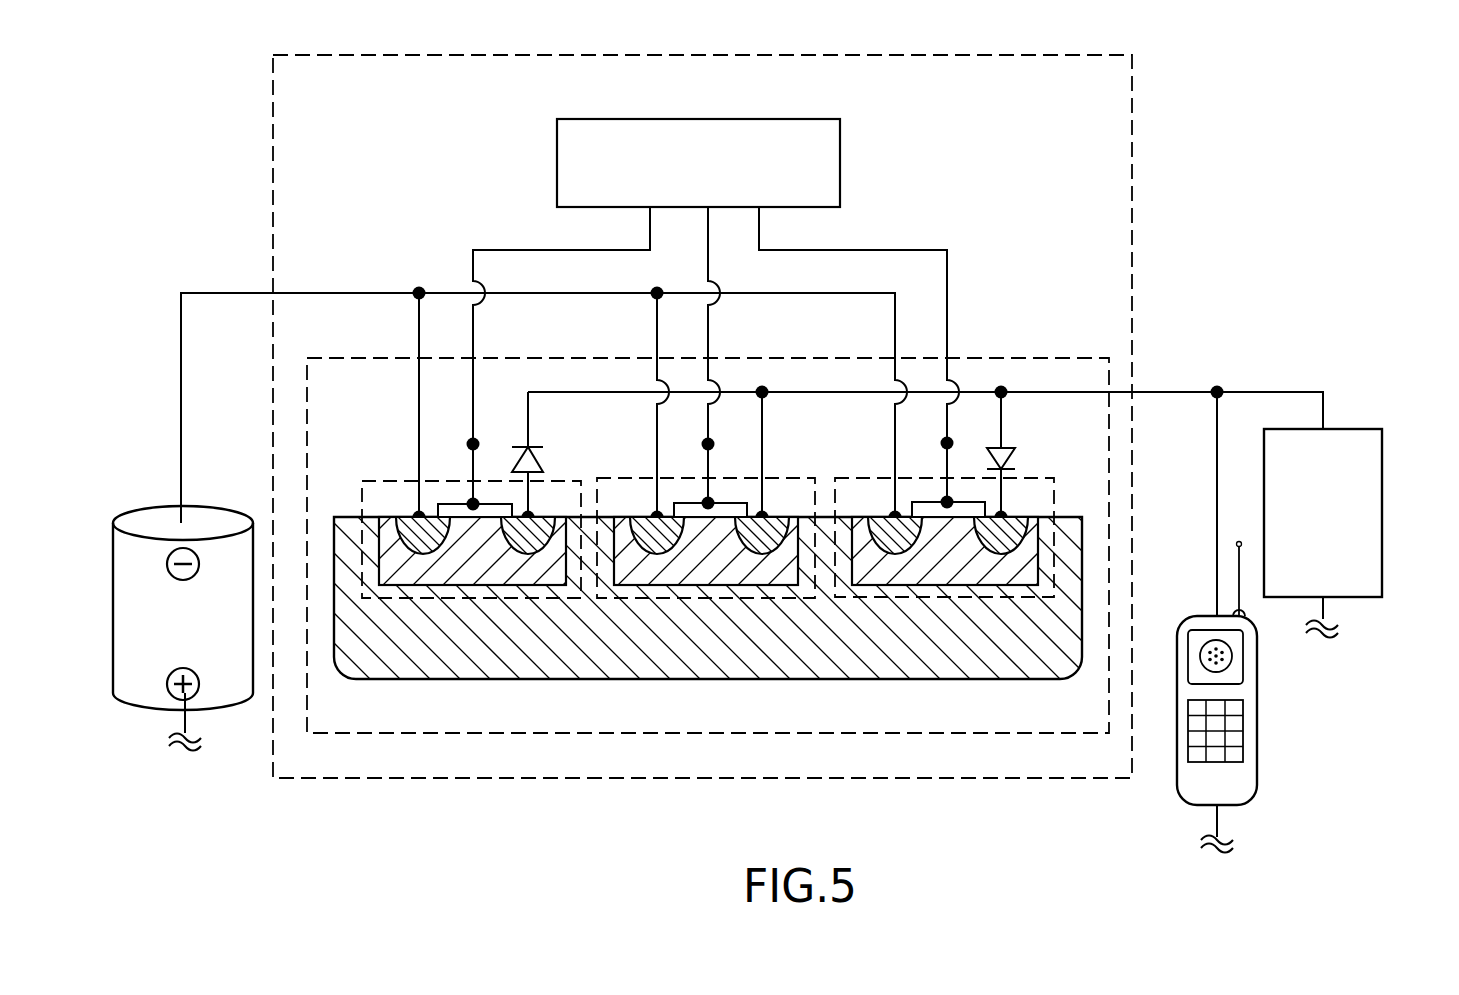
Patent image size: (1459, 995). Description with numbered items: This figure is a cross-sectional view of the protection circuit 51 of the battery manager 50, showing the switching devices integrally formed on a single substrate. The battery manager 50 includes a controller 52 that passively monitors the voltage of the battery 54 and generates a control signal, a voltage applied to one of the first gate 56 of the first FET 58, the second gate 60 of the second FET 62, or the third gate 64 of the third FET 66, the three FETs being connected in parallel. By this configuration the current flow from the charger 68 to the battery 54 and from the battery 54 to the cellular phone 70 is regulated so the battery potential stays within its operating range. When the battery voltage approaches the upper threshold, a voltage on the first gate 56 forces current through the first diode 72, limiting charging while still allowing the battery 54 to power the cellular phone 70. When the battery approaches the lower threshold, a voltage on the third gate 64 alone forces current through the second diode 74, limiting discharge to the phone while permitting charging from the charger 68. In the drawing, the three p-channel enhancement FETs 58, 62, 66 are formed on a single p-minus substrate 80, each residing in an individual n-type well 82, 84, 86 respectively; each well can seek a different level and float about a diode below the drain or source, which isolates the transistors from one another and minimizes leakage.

The battery manager 50 is at (1132, 101).
The protection circuit 51 is at (1044, 358).
The controller 52 is at (840, 157).
The battery 54 is at (137, 690).
The first gate 56 is at (473, 444).
The first FET 58 is at (582, 493).
The second gate 60 is at (708, 444).
The second FET 62 is at (815, 490).
The third gate 64 is at (947, 443).
The third FET 66 is at (1055, 492).
The charger 68 is at (1374, 566).
The cellular phone 70 is at (1245, 793).
The first diode 72 is at (543, 463).
The second diode 74 is at (1017, 455).
The p-minus substrate 80 is at (745, 660).
The first n-type well 82 is at (470, 575).
The second n-type well 84 is at (714, 575).
The third n-type well 86 is at (928, 572).